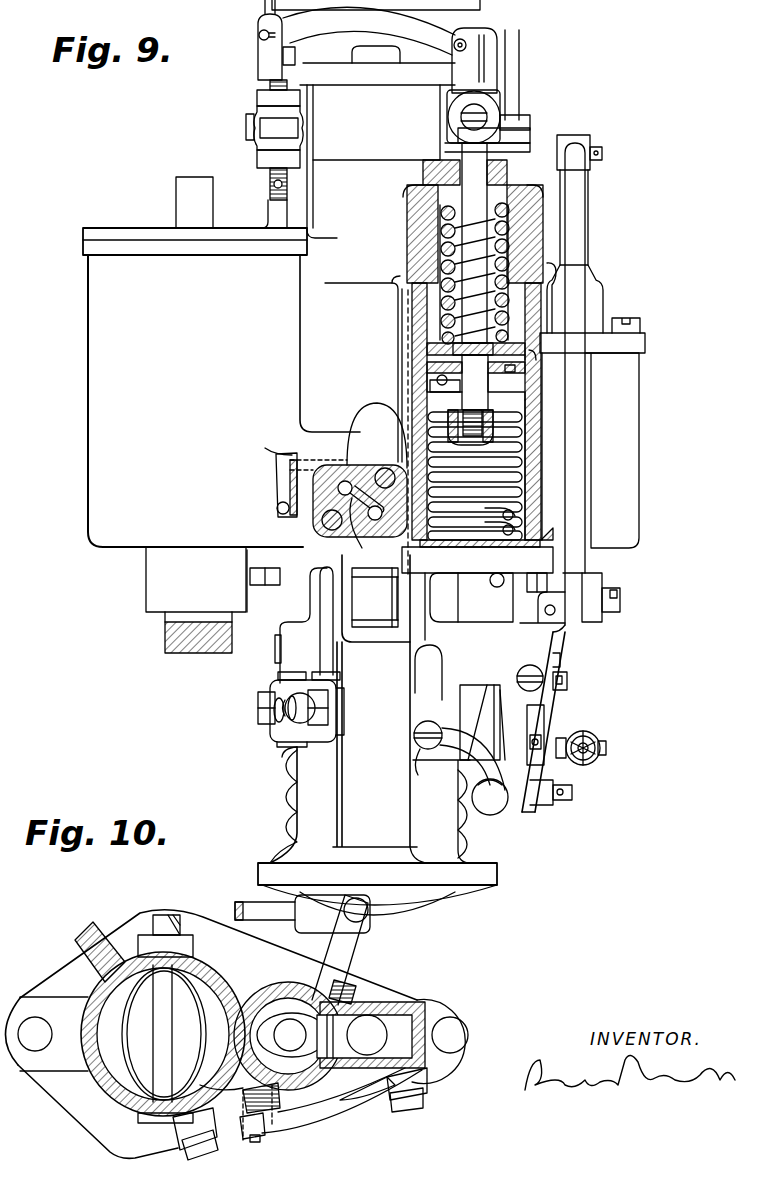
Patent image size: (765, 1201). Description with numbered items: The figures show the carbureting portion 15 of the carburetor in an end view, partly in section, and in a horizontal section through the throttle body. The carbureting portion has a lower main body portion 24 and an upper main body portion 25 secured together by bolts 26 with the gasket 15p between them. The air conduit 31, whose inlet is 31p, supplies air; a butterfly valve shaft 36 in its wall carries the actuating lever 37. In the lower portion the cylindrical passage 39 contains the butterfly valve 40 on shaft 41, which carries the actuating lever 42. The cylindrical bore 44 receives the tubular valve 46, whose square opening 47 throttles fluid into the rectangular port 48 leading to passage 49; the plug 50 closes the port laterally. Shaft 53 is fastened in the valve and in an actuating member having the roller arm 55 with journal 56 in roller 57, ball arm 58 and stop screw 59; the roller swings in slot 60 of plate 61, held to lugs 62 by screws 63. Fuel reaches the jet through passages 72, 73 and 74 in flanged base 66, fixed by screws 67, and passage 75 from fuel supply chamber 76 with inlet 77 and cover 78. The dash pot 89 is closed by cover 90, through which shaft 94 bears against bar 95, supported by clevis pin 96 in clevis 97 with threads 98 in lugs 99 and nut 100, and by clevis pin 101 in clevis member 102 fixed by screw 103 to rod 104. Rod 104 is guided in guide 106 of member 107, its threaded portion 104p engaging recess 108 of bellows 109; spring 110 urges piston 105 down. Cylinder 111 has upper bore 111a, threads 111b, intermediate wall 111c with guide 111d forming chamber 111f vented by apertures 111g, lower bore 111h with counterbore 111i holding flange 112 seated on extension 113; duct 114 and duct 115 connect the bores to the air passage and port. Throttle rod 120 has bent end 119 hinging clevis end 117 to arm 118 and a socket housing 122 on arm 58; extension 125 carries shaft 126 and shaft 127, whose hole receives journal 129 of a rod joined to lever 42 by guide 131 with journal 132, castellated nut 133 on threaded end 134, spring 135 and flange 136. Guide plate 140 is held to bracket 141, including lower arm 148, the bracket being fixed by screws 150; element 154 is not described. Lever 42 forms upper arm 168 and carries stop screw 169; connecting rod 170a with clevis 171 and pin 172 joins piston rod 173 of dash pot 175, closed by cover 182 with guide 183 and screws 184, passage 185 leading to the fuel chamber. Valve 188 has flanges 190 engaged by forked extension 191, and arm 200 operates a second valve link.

In FIG. 9, the carbureting portion 15 is at (632, 555).
In FIG. 9, the gasket 15p is at (243, 556).
In FIG. 9, the lower main body portion 24 is at (480, 868).
In FIG. 10, the lower main body portion 24 is at (211, 1034).
In FIG. 9, the upper main body portion 25 is at (638, 450).
In FIG. 9, the bolts 26 is at (268, 585).
In FIG. 9, the air conduit 31 is at (297, 212).
In FIG. 9, the conduit inlet 31p is at (482, 12).
In FIG. 9, the shaft 36 is at (246, 128).
In FIG. 9, the actuating lever 37 is at (519, 55).
In FIG. 9, the cylindrical passage 39 is at (318, 792).
In FIG. 10, the cylindrical passage 39 is at (110, 1067).
In FIG. 10, the butterfly valve 40 is at (193, 1030).
In FIG. 9, the shaft 41 is at (275, 650).
In FIG. 10, the shaft 41 is at (160, 920).
In FIG. 9, the actuating lever 42 is at (548, 705).
In FIG. 9, the cylindrical bore 44 is at (434, 672).
In FIG. 10, the cylindrical bore 44 is at (280, 983).
In FIG. 9, the tubular valve 46 is at (379, 597).
In FIG. 10, the tubular valve 46 is at (292, 1038).
In FIG. 9, the opening 47 is at (363, 617).
In FIG. 10, the opening 47 is at (319, 1036).
In FIG. 9, the port 48 is at (389, 626).
In FIG. 10, the port 48 is at (335, 1036).
In FIG. 9, the passage 49 is at (347, 709).
In FIG. 10, the passage 49 is at (371, 1035).
In FIG. 10, the plug 50 is at (430, 1002).
In FIG. 10, the shaft 53 is at (290, 1035).
In FIG. 10, the roller arm 55 is at (345, 1103).
In FIG. 9, the journal 56 is at (290, 720).
In FIG. 10, the journal 56 is at (252, 1142).
In FIG. 9, the roller 57 is at (275, 712).
In FIG. 10, the roller 57 is at (280, 1103).
In FIG. 9, the ball arm 58 is at (459, 755).
In FIG. 10, the ball arm 58 is at (356, 943).
In FIG. 9, the stop screw 59 is at (427, 766).
In FIG. 10, the stop screw 59 is at (355, 980).
In FIG. 9, the slot 60 is at (299, 699).
In FIG. 9, the plate 61 is at (338, 725).
In FIG. 10, the plate 61 is at (318, 1124).
In FIG. 9, the lugs 62 is at (288, 672).
In FIG. 10, the lugs 62 is at (178, 1128).
In FIG. 9, the screws 63 is at (258, 700).
In FIG. 10, the screws 63 is at (205, 1160).
In FIG. 9, the flanged base 66 is at (383, 468).
In FIG. 9, the screws 67 is at (400, 465).
In FIG. 9, the passages 72 is at (378, 521).
In FIG. 9, the passage 73 is at (362, 532).
In FIG. 9, the passage 74 is at (345, 482).
In FIG. 9, the passage 75 is at (278, 463).
In FIG. 9, the fuel supply chamber 76 is at (198, 400).
In FIG. 9, the fuel inlet 77 is at (185, 653).
In FIG. 9, the cover 78 is at (160, 228).
In FIG. 9, the dash pot 89 is at (376, 122).
In FIG. 9, the cover 90 is at (327, 70).
In FIG. 9, the shaft 94 is at (376, 46).
In FIG. 9, the bar 95 is at (369, 31).
In FIG. 9, the clevis pin 96 is at (259, 34).
In FIG. 9, the adjustable clevis 97 is at (258, 52).
In FIG. 9, the threaded portion 98 is at (270, 84).
In FIG. 9, the lugs 99 is at (257, 97).
In FIG. 9, the adjusting nut 100 is at (278, 128).
In FIG. 9, the clevis pin 101 is at (457, 40).
In FIG. 9, the clevis member 102 is at (468, 82).
In FIG. 9, the screw 103 is at (462, 127).
In FIG. 9, the economizer piston rod 104 is at (468, 152).
In FIG. 9, the threaded portion 104p is at (484, 412).
In FIG. 9, the economizer control piston 105 is at (427, 346).
In FIG. 9, the guide 106 is at (512, 205).
In FIG. 9, the member 107 is at (512, 183).
In FIG. 9, the threaded recess 108 is at (456, 412).
In FIG. 9, the air-tight bellows 109 is at (522, 445).
In FIG. 9, the spring 110 is at (400, 262).
In FIG. 9, the cylinder 111 is at (540, 420).
In FIG. 9, the upper cylinder bore 111a is at (408, 280).
In FIG. 9, the threads 111b is at (407, 198).
In FIG. 9, the intermediate wall 111c is at (543, 380).
In FIG. 9, the guide 111d is at (427, 382).
In FIG. 9, the chamber 111f is at (427, 366).
In FIG. 9, the apertures 111g is at (524, 360).
In FIG. 9, the lower cylindrical bore 111h is at (528, 468).
In FIG. 9, the counterbore 111i is at (518, 528).
In FIG. 9, the flange 112 is at (526, 510).
In FIG. 9, the extension 113 is at (553, 559).
In FIG. 9, the duct 114 is at (437, 382).
In FIG. 9, the duct 115 is at (436, 560).
In FIG. 9, the clevis end 117 is at (540, 805).
In FIG. 9, the arm 118 is at (526, 814).
In FIG. 9, the bent end 119 is at (572, 793).
In FIG. 10, the throttle rod 120 is at (250, 902).
In FIG. 9, the housing 122 is at (460, 811).
In FIG. 10, the housing 122 is at (332, 914).
In FIG. 9, the extension 125 is at (604, 580).
In FIG. 10, the extension 125 is at (100, 926).
In FIG. 9, the shaft 126 is at (620, 600).
In FIG. 9, the shaft 127 is at (567, 680).
In FIG. 9, the journal portion 129 is at (534, 734).
In FIG. 9, the guide 131 is at (594, 740).
In FIG. 9, the journal portion 132 is at (560, 765).
In FIG. 9, the castellated nut 133 is at (598, 758).
In FIG. 9, the threaded end 134 is at (600, 748).
In FIG. 9, the spring 135 is at (592, 738).
In FIG. 9, the flange 136 is at (587, 732).
In FIG. 9, the guide plate 140 is at (500, 725).
In FIG. 9, the bracket 141 is at (486, 704).
In FIG. 9, the lower arm 148 is at (478, 722).
In FIG. 9, the screws 150 is at (471, 597).
In FIG. 9, the rib 154 is at (282, 820).
In FIG. 9, the upper arm 168 is at (566, 635).
In FIG. 9, the stop screw 169 is at (522, 668).
In FIG. 9, the connecting rod 170a is at (588, 178).
In FIG. 9, the clevis 171 is at (590, 138).
In FIG. 9, the clevis pin 172 is at (602, 153).
In FIG. 9, the piston rod 173 is at (590, 196).
In FIG. 9, the dash pot 175 is at (628, 436).
In FIG. 9, the cover 182 is at (645, 343).
In FIG. 9, the guide 183 is at (603, 300).
In FIG. 9, the screws 184 is at (640, 325).
In FIG. 9, the passage 185 is at (277, 518).
In FIG. 9, the valve 188 is at (512, 162).
In FIG. 9, the flanges 190 is at (540, 125).
In FIG. 9, the forked extension 191 is at (532, 132).
In FIG. 9, the arm 200 is at (560, 262).